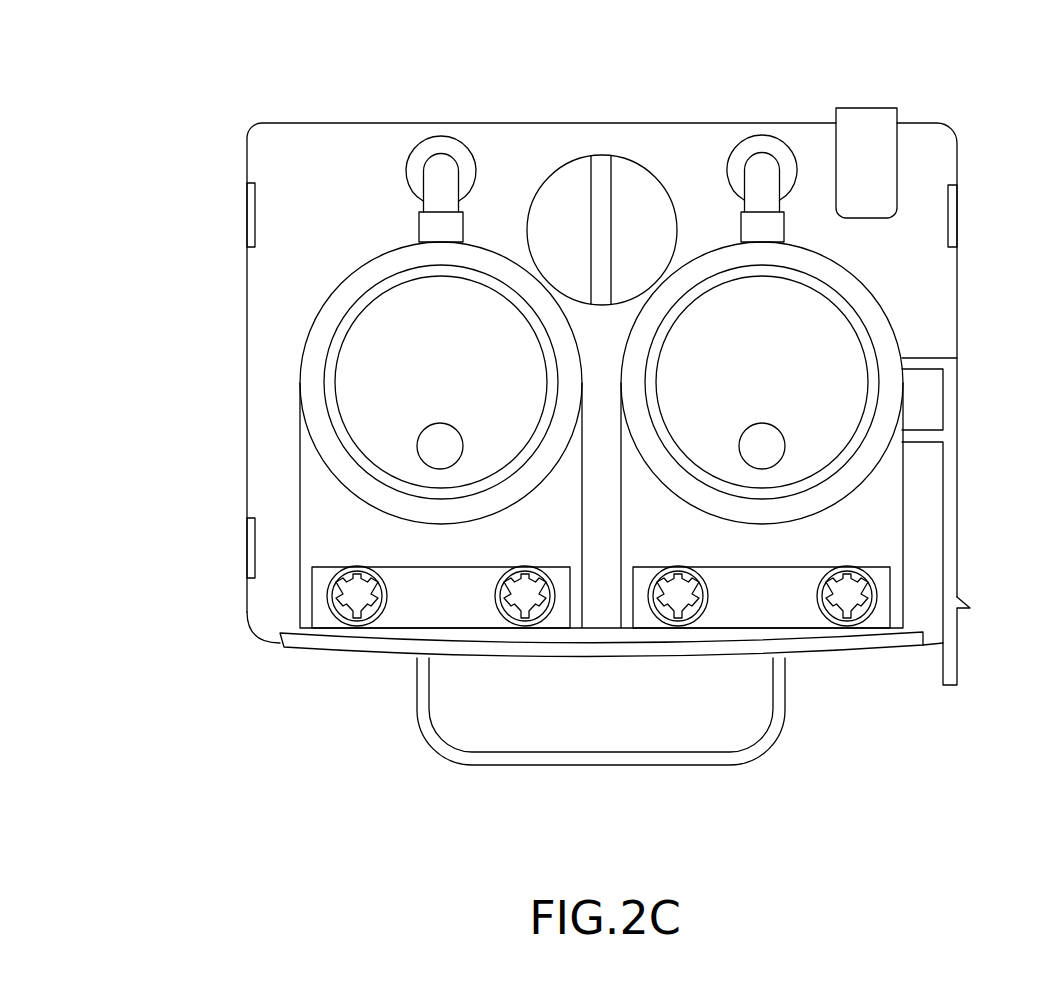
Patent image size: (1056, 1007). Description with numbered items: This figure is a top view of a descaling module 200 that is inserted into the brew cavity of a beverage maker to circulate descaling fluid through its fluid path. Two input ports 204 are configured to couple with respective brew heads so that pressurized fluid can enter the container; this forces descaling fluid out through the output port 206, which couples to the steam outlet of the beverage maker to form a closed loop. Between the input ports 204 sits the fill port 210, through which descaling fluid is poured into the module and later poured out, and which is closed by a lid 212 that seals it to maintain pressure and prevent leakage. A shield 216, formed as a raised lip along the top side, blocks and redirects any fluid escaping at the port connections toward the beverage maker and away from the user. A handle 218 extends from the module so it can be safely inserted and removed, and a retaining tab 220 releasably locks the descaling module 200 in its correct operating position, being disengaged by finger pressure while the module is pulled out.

The descaling module 200 is at (195, 62).
The input port 204 is at (370, 332).
The output port 206 is at (867, 125).
The fill port 210 is at (577, 155).
The lid 212 is at (565, 198).
The shield 216 is at (293, 640).
The handle 218 is at (440, 735).
The retaining tab 220 is at (958, 590).